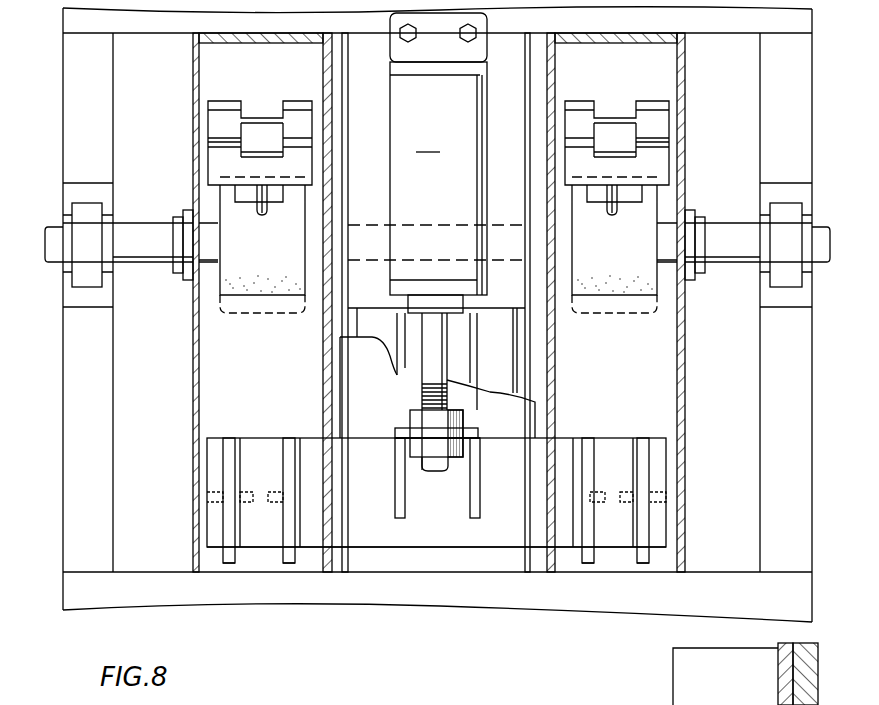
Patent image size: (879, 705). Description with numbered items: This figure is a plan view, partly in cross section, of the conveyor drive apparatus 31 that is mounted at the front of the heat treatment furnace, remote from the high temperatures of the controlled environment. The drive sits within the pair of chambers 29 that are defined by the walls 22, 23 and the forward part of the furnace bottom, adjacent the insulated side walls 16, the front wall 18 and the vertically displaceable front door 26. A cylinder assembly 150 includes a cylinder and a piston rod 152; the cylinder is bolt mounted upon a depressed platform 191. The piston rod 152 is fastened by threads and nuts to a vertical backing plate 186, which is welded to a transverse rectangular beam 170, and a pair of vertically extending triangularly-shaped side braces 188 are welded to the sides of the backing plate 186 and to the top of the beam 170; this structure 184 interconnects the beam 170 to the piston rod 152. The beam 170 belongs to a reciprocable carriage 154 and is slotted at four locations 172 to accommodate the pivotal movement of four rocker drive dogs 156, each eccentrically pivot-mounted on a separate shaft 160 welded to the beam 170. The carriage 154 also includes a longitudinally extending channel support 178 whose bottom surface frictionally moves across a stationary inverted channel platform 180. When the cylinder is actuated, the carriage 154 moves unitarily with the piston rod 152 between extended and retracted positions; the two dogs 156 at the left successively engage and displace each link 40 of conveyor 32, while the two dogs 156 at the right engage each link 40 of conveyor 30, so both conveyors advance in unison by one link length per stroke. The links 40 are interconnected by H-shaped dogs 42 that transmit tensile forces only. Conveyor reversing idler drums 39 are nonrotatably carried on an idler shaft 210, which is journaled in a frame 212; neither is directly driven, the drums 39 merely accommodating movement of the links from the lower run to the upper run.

The conveyor drive apparatus 31 is at (43, 31).
The wall 22 is at (213, 40).
The chamber 29 is at (289, 50).
The depressed platform 191 is at (500, 50).
The frame 212 is at (718, 38).
The driven conveyor 32 is at (261, 100).
The driven conveyor 30 is at (619, 100).
The link 40 is at (208, 142).
The cylinder assembly 150 is at (502, 116).
The dog 42 is at (262, 216).
The idler shaft 210 is at (137, 250).
The conveyor reversing idler drum 39 is at (262, 292).
The wall 23 is at (322, 379).
The channel support 178 is at (398, 350).
The inverted channel platform 180 is at (506, 363).
The side wall 16 is at (194, 388).
The piston rod 152 is at (424, 393).
The vertical backing plate 186 is at (472, 428).
The slot 172 is at (229, 446).
The side brace 188 is at (395, 480).
The shaft 160 is at (222, 498).
The interconnecting structure 184 is at (500, 490).
The rocker drive dog 156 is at (229, 565).
The reciprocable carriage 154 is at (415, 558).
The transverse rectangular beam 170 is at (486, 538).
The front door 26 is at (673, 680).
The front wall 18 is at (778, 692).